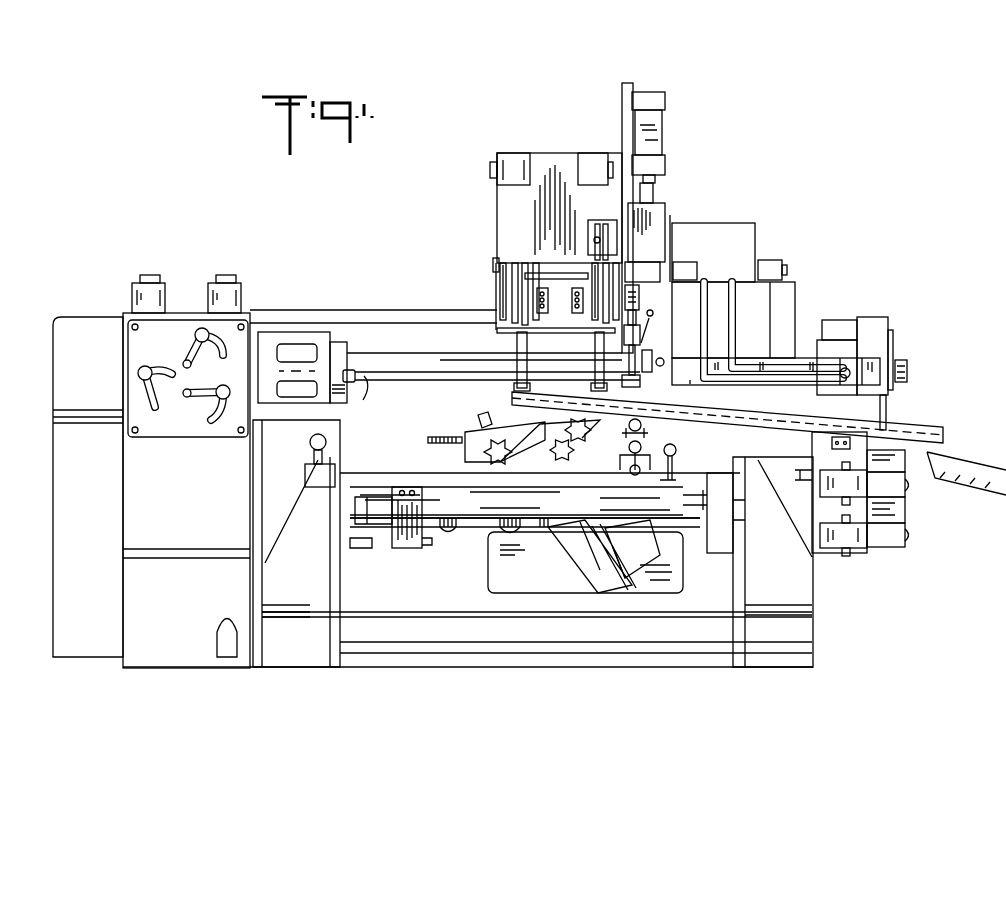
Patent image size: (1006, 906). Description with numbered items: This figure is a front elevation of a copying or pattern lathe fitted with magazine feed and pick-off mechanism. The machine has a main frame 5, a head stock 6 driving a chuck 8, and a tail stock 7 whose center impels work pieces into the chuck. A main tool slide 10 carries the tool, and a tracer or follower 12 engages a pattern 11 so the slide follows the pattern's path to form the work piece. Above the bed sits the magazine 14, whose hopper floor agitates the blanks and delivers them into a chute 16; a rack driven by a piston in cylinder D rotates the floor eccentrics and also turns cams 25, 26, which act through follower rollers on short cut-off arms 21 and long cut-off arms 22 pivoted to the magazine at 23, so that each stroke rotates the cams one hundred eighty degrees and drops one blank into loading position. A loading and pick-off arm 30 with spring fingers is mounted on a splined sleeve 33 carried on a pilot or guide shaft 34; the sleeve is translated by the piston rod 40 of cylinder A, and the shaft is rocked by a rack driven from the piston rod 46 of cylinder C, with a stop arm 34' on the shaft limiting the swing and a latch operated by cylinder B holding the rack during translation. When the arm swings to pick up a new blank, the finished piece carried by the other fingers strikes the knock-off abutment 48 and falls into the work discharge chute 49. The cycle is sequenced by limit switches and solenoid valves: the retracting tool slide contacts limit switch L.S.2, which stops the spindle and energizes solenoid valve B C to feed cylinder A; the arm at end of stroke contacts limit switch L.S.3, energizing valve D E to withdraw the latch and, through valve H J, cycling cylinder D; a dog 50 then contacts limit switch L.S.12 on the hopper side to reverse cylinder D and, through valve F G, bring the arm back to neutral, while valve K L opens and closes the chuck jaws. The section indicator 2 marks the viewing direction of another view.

The section line indicator 2 is at (939, 371).
The main frame 5 is at (400, 332).
The head stock 6 is at (190, 416).
The tail stock 7 is at (725, 228).
The chuck 8 is at (345, 333).
The main tool slide 10 is at (304, 370).
The pattern 11 is at (470, 530).
The tracer or follower 12 is at (548, 575).
The magazine 14 is at (548, 182).
The chute 16 is at (502, 328).
The short cut-off arms 21 is at (527, 274).
The long cut-off arms 22 is at (510, 303).
The pivot of cut-off arms 23 is at (494, 266).
The cam 25 is at (593, 221).
The cam 26 is at (609, 222).
The loading and pick-off arm 30 is at (517, 357).
The sleeve or quill 33 is at (512, 400).
The pilot or guide shaft 34 is at (491, 389).
The stop arm 34' is at (912, 380).
The piston rod 40 is at (652, 372).
The piston rod 46 is at (885, 425).
The knock-off abutment 48 is at (586, 330).
The work discharge chute 49 is at (933, 433).
The dog 50 is at (628, 369).
The cylinder A is at (777, 384).
The cylinder B is at (690, 279).
The cylinder C is at (934, 506).
The cylinder D is at (663, 142).
The solenoid valve DE E is at (864, 526).
The solenoid valve FG G is at (860, 492).
The solenoid valve HJ H is at (513, 169).
The solenoid valve HJ J is at (600, 180).
The solenoid valve KL K is at (148, 294).
The solenoid valve KL L is at (224, 294).
The limit switch LS2 L.S.2 is at (403, 550).
The limit switch LS3 L.S.3 is at (371, 397).
The limit switch LS12 L.S.12 is at (651, 272).